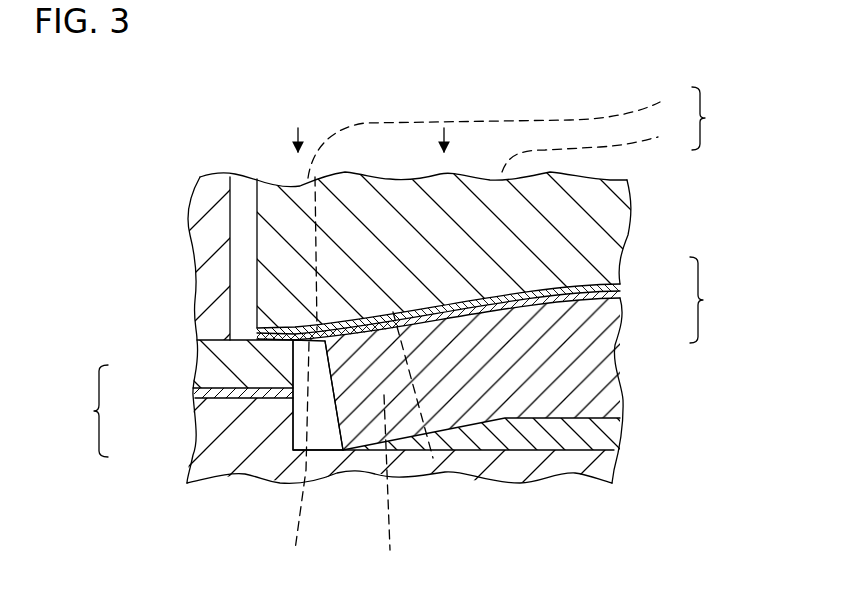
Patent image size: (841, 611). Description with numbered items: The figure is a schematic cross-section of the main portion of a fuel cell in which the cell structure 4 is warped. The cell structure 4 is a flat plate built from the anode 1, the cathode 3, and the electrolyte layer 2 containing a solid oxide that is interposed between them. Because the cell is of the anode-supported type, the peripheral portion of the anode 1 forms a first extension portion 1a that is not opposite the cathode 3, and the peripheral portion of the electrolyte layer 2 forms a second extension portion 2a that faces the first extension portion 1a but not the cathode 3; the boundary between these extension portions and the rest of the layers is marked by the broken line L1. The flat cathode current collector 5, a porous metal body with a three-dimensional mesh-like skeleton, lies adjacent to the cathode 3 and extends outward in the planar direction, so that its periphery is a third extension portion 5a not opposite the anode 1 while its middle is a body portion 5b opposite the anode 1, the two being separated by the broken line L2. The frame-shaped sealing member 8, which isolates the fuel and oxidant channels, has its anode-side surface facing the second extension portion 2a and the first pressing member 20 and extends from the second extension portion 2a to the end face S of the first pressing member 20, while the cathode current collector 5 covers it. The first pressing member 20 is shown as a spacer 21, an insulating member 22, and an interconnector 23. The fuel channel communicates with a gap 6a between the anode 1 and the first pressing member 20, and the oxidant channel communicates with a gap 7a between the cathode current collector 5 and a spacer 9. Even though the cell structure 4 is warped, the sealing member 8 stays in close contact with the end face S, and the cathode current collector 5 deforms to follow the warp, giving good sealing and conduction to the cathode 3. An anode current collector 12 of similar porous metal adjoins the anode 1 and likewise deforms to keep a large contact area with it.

The anode 1 is at (602, 322).
The first extension portion 1a is at (390, 486).
The electrolyte layer 2 is at (620, 297).
The second extension portion 2a is at (296, 460).
The cathode 3 is at (622, 292).
The cell structure 4 is at (488, 300).
The cathode current collector 5 is at (617, 222).
The third extension portion 5a is at (500, 134).
The body portion 5b is at (597, 149).
The gap 6a is at (324, 432).
The gap 7a is at (243, 184).
The sealing member 8 is at (293, 330).
The spacer 9 is at (205, 237).
The anode current collector 12 is at (613, 433).
The first pressing member 20 is at (341, 411).
The spacer 21 is at (200, 373).
The insulating member 22 is at (197, 398).
The interconnector 23 is at (200, 453).
The end face S is at (240, 335).
The broken line L1 is at (413, 390).
The broken line L2 is at (313, 233).